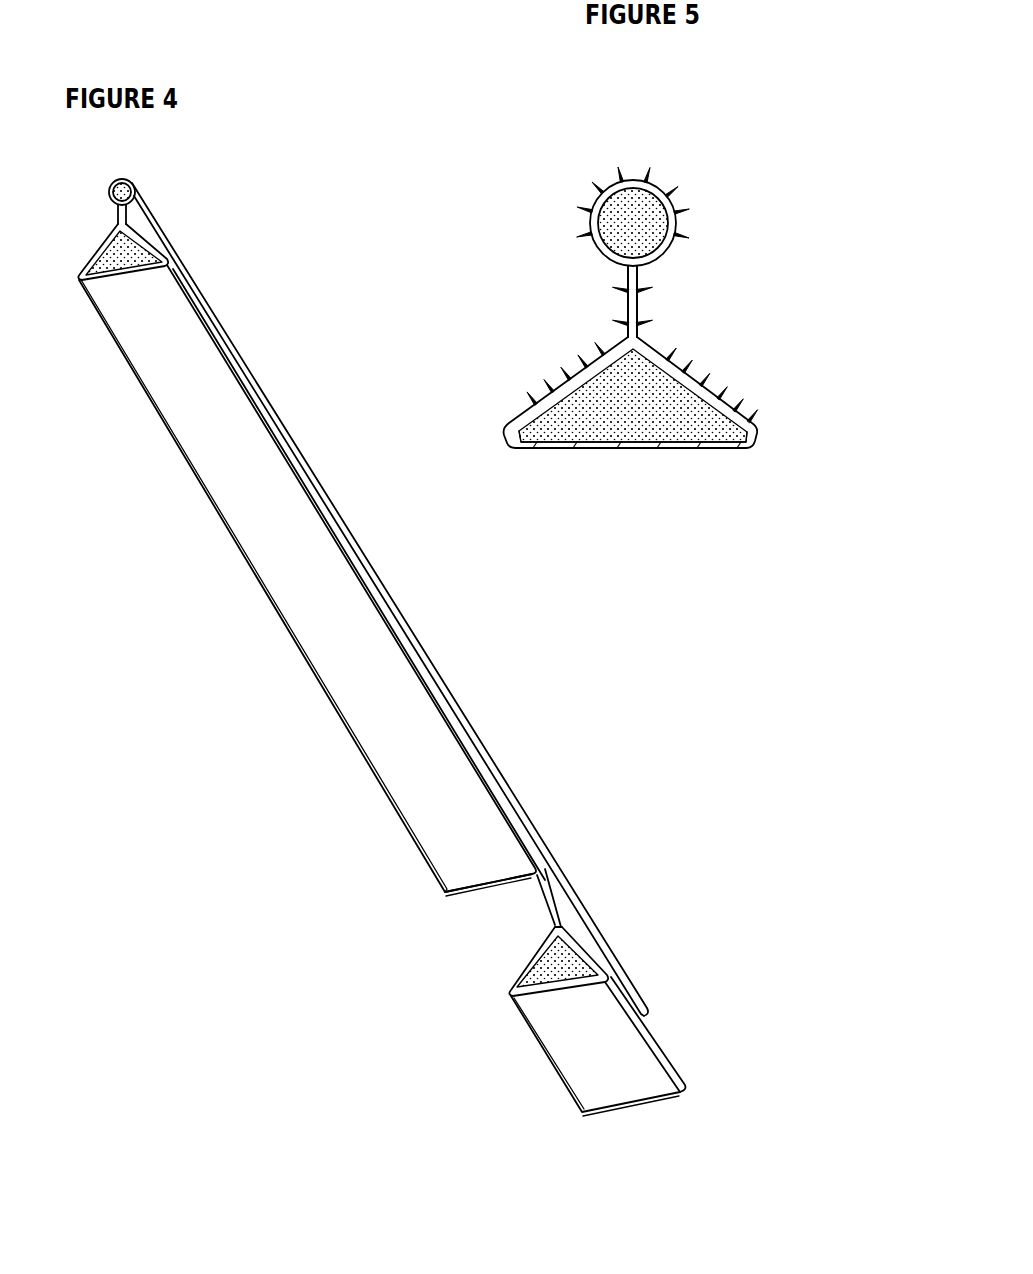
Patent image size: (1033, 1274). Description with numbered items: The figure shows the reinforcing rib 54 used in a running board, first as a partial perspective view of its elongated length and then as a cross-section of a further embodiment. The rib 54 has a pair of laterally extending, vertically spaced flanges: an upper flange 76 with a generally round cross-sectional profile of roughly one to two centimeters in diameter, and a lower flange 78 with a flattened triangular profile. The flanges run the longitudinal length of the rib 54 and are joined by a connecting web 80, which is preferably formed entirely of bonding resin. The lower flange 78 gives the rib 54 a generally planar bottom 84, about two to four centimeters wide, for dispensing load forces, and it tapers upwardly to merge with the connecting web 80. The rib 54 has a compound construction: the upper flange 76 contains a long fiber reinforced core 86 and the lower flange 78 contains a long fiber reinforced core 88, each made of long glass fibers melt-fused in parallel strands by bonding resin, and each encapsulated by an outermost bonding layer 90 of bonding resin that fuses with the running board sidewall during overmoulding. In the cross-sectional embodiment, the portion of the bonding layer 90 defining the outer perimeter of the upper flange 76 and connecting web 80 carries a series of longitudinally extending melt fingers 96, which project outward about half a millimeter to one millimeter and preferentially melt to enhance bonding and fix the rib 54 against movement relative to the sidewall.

In FIG. 4, the reinforcing rib 54 is at (291, 351).
In FIG. 5, the reinforcing rib 54 is at (491, 238).
In FIG. 4, the upper flange 76 is at (163, 229).
In FIG. 5, the upper flange 76 is at (655, 228).
In FIG. 4, the lower flange 78 is at (298, 622).
In FIG. 5, the lower flange 78 is at (571, 419).
In FIG. 4, the connecting web 80 is at (117, 222).
In FIG. 5, the connecting web 80 is at (635, 307).
In FIG. 4, the planar bottom 84 is at (400, 778).
In FIG. 5, the planar bottom 84 is at (627, 448).
In FIG. 4, the long fiber reinforced core 86 is at (122, 188).
In FIG. 5, the long fiber reinforced core 86 is at (639, 202).
In FIG. 4, the long fiber reinforced core 88 is at (119, 259).
In FIG. 5, the long fiber reinforced core 88 is at (679, 406).
In FIG. 4, the bonding layer 90 is at (303, 452).
In FIG. 5, the bonding layer 90 is at (732, 411).
In FIG. 5, the melt fingers 96 is at (651, 177).